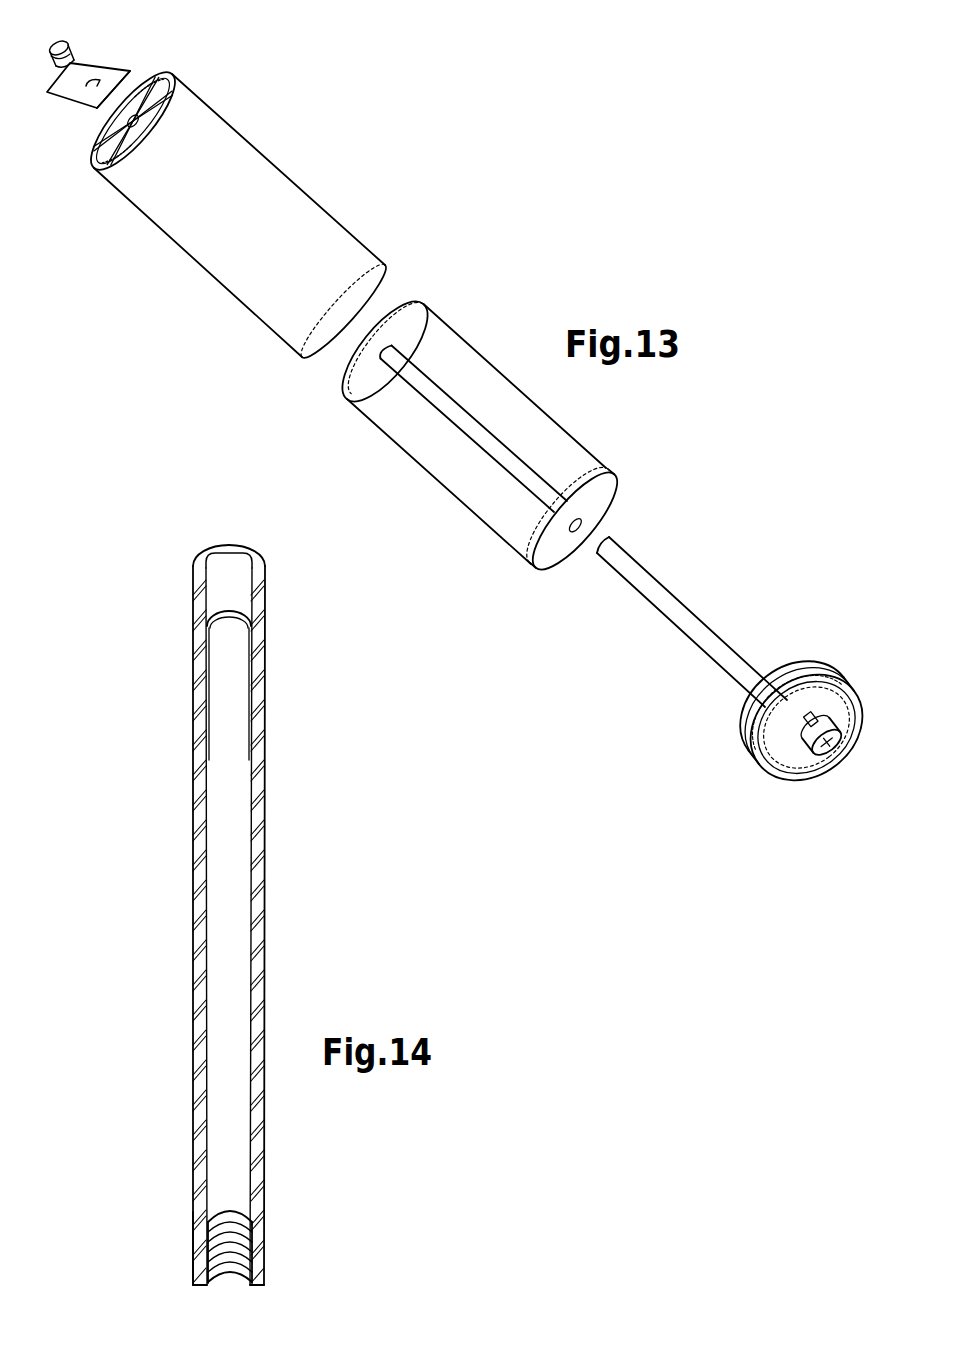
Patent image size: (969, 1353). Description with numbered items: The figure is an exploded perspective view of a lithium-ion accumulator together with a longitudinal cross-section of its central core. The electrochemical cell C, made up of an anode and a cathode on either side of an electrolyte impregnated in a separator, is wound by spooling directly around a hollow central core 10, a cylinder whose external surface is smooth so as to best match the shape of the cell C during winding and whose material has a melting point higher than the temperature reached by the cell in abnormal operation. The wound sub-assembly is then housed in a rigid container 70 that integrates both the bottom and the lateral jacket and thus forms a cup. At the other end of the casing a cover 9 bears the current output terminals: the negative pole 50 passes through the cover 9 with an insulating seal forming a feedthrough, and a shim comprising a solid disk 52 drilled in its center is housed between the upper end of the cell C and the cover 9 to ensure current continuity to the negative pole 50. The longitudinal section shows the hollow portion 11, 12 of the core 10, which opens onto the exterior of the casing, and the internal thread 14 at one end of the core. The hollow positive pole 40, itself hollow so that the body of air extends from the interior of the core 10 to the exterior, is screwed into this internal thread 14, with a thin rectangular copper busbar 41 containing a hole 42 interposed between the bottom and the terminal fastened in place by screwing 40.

In FIG. 13, the positive pole 40 is at (50, 53).
In FIG. 13, the busbar 41 is at (134, 78).
In FIG. 13, the hole 42 is at (102, 80).
In FIG. 13, the rigid container 70 is at (248, 166).
In FIG. 13, the electrochemical cell C is at (474, 385).
In FIG. 13, the hollow central core 10 is at (641, 576).
In FIG. 14, the hollow central core 10 is at (256, 700).
In FIG. 13, the solid disk 52 is at (801, 696).
In FIG. 13, the cover 9 is at (788, 768).
In FIG. 13, the negative pole 50 is at (838, 760).
In FIG. 14, the hollow portion 11 is at (213, 547).
In FIG. 14, the hollow portion 12 is at (197, 1256).
In FIG. 14, the internal thread 14 is at (243, 1240).